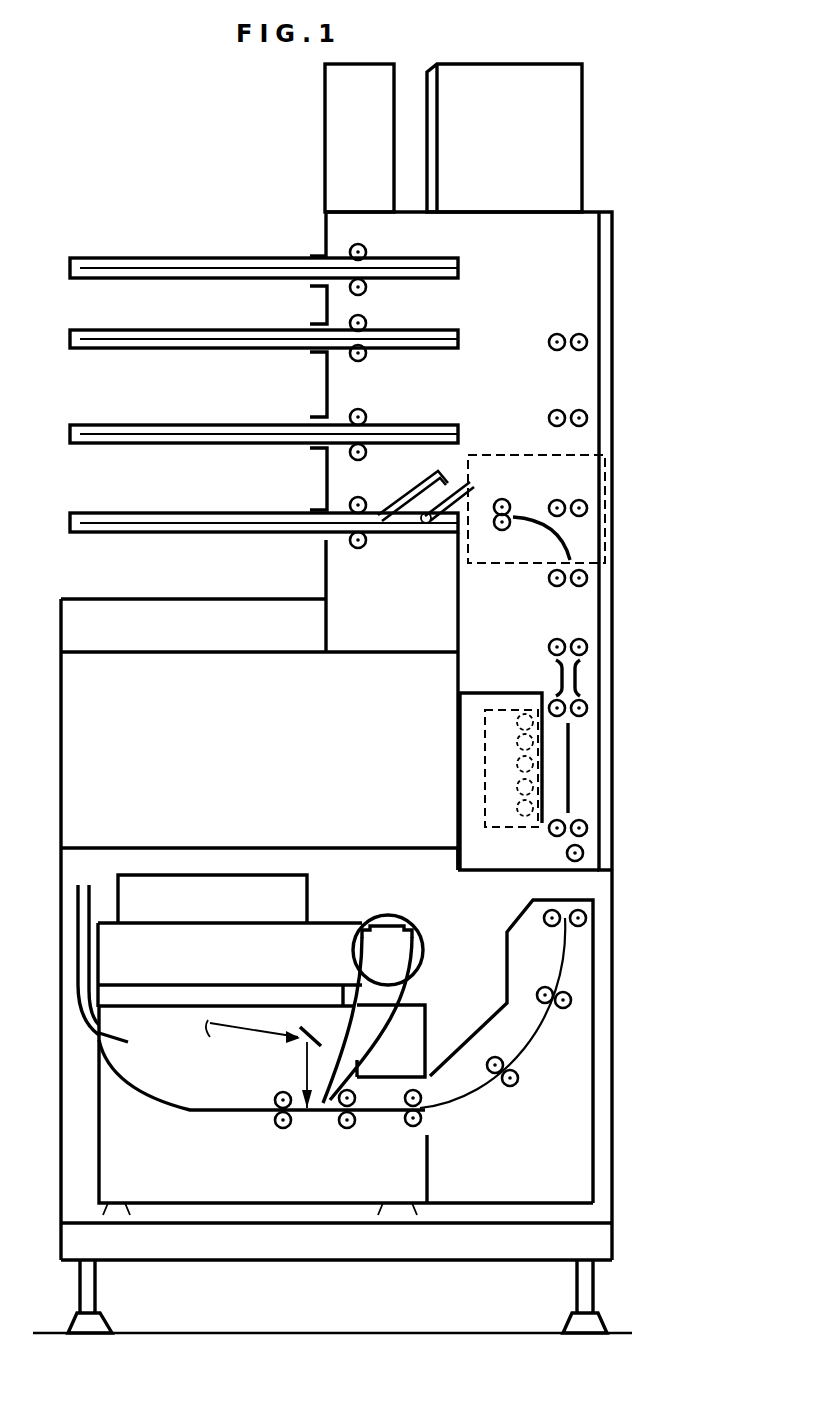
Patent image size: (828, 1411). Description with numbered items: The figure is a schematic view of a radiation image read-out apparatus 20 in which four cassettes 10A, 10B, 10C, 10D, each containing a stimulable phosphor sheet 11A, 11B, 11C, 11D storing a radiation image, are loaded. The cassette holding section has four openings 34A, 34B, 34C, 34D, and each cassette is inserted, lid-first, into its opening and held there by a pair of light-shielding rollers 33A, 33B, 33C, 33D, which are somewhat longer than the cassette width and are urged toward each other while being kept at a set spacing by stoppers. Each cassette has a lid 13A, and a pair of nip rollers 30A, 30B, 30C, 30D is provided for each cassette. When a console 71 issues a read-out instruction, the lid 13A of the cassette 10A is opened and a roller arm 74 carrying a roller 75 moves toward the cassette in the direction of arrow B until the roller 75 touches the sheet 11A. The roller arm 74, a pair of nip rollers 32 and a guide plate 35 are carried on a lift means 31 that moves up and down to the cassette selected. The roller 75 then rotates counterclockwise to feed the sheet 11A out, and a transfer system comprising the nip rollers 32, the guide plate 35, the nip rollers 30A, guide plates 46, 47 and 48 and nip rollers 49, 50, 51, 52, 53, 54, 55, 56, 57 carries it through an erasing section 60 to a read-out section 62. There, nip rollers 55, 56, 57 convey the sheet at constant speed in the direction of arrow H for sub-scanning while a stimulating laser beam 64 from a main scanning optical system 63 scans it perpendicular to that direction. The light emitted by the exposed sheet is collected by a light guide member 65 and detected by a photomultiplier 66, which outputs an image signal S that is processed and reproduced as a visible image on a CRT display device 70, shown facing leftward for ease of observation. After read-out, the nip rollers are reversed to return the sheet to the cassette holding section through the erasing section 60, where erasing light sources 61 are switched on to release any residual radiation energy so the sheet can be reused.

The radiation image read-out apparatus 20 is at (140, 142).
The console 71 is at (325, 130).
The cathode ray tube (CRT) display device 70 is at (582, 130).
The cassette 10D is at (118, 258).
The stimulable phosphor sheet 11D is at (170, 258).
The opening 34D is at (310, 256).
The light-shielding rollers 33D is at (352, 282).
The cassette 10C is at (118, 330).
The stimulable phosphor sheet 11C is at (178, 339).
The opening 34C is at (310, 324).
The light-shielding rollers 33C is at (370, 350).
The cassette 10B is at (116, 425).
The stimulable phosphor sheet 11B is at (172, 434).
The opening 34B is at (310, 417).
The light-shielding rollers 33B is at (370, 448).
The cassette 10A is at (110, 513).
The stimulable phosphor sheet 11A is at (164, 523).
The opening 34A is at (310, 510).
The light-shielding rollers 33A is at (354, 535).
The lid 13A is at (410, 498).
The roller arm 74 is at (470, 482).
The roller 75 is at (426, 524).
The direction of arrow B is at (478, 488).
The nip rollers 30D is at (588, 342).
The nip rollers 30C is at (588, 418).
The lift means 31 is at (605, 472).
The nip rollers 30B is at (588, 506).
The guide plate 35 is at (570, 545).
The nip rollers 30A is at (588, 578).
The nip rollers 32 is at (502, 531).
The nip rollers 49 is at (588, 645).
The guide plate 46 is at (558, 677).
The nip rollers 50 is at (588, 706).
The erasing light sources 61 is at (487, 747).
The erasing section 60 is at (487, 765).
The nip rollers 51 is at (552, 835).
The image signal S is at (388, 790).
The read-out section 62 is at (152, 867).
The main scanning optical system 63 is at (283, 940).
The photomultiplier 66 is at (420, 927).
The nip rollers 52 is at (545, 917).
The guide plate 47 is at (560, 945).
The light guide member 65 is at (388, 1030).
The stimulating laser beam 64 is at (305, 1060).
The nip rollers 53 is at (563, 1010).
The nip rollers 54 is at (515, 1087).
The nip rollers 55 is at (420, 1125).
The nip rollers 56 is at (350, 1130).
The nip rollers 57 is at (283, 1130).
The direction of arrow H is at (322, 1127).
The guide plate 48 is at (186, 1115).